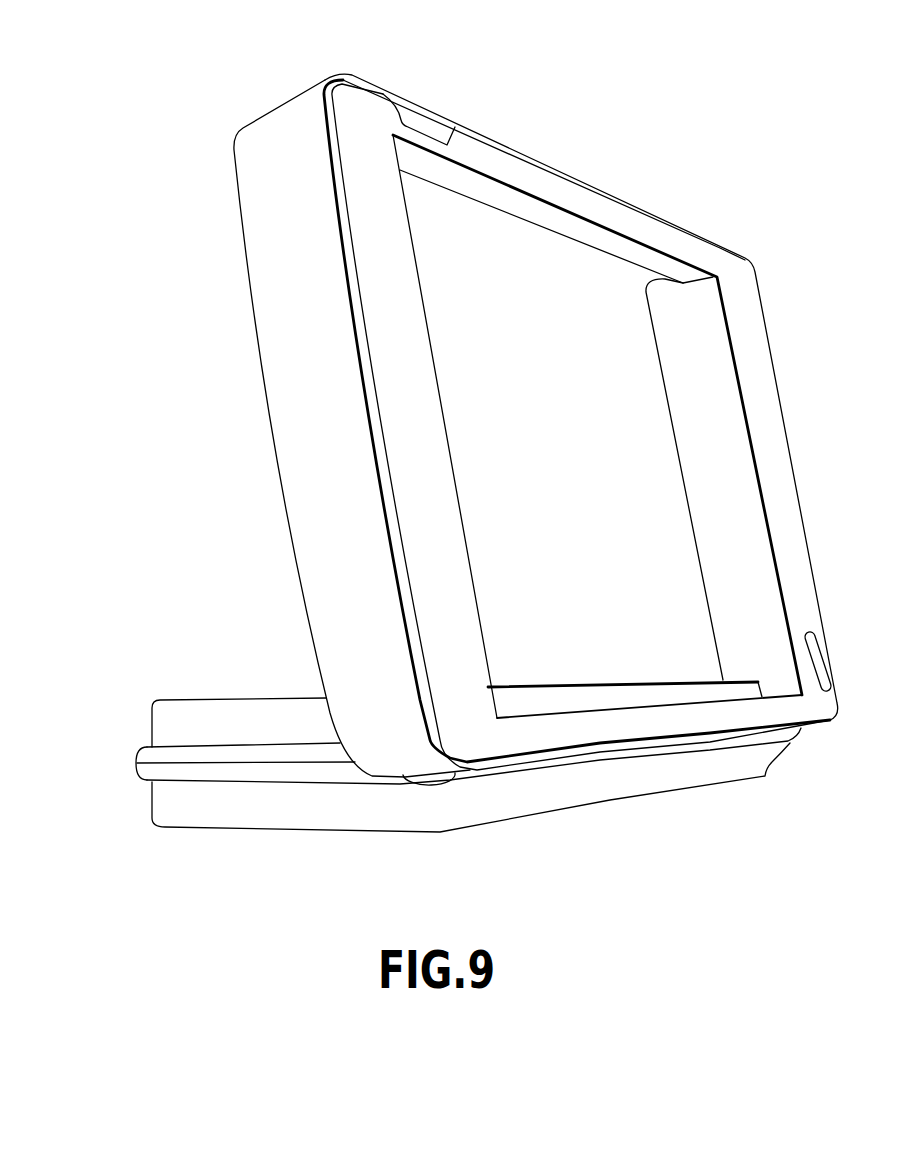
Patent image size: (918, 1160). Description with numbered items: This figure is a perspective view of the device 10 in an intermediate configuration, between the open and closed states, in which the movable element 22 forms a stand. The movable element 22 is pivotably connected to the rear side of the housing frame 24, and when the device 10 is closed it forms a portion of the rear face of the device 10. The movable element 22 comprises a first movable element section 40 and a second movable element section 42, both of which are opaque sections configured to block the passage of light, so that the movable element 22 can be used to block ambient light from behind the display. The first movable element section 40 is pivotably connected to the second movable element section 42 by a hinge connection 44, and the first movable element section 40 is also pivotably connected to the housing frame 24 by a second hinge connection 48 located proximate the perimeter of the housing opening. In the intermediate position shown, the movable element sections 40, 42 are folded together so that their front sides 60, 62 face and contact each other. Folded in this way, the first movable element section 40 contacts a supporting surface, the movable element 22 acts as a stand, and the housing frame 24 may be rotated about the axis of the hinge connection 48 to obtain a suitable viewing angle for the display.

The device 10 is at (123, 53).
The movable element 22 is at (150, 802).
The housing frame 24 is at (363, 150).
The first movable element section 40 is at (220, 827).
The second movable element section 42 is at (192, 698).
The hinge connection 44 is at (140, 763).
The hinge connection 48 is at (427, 778).
The front side 60 is at (265, 770).
The front side 62 is at (300, 755).